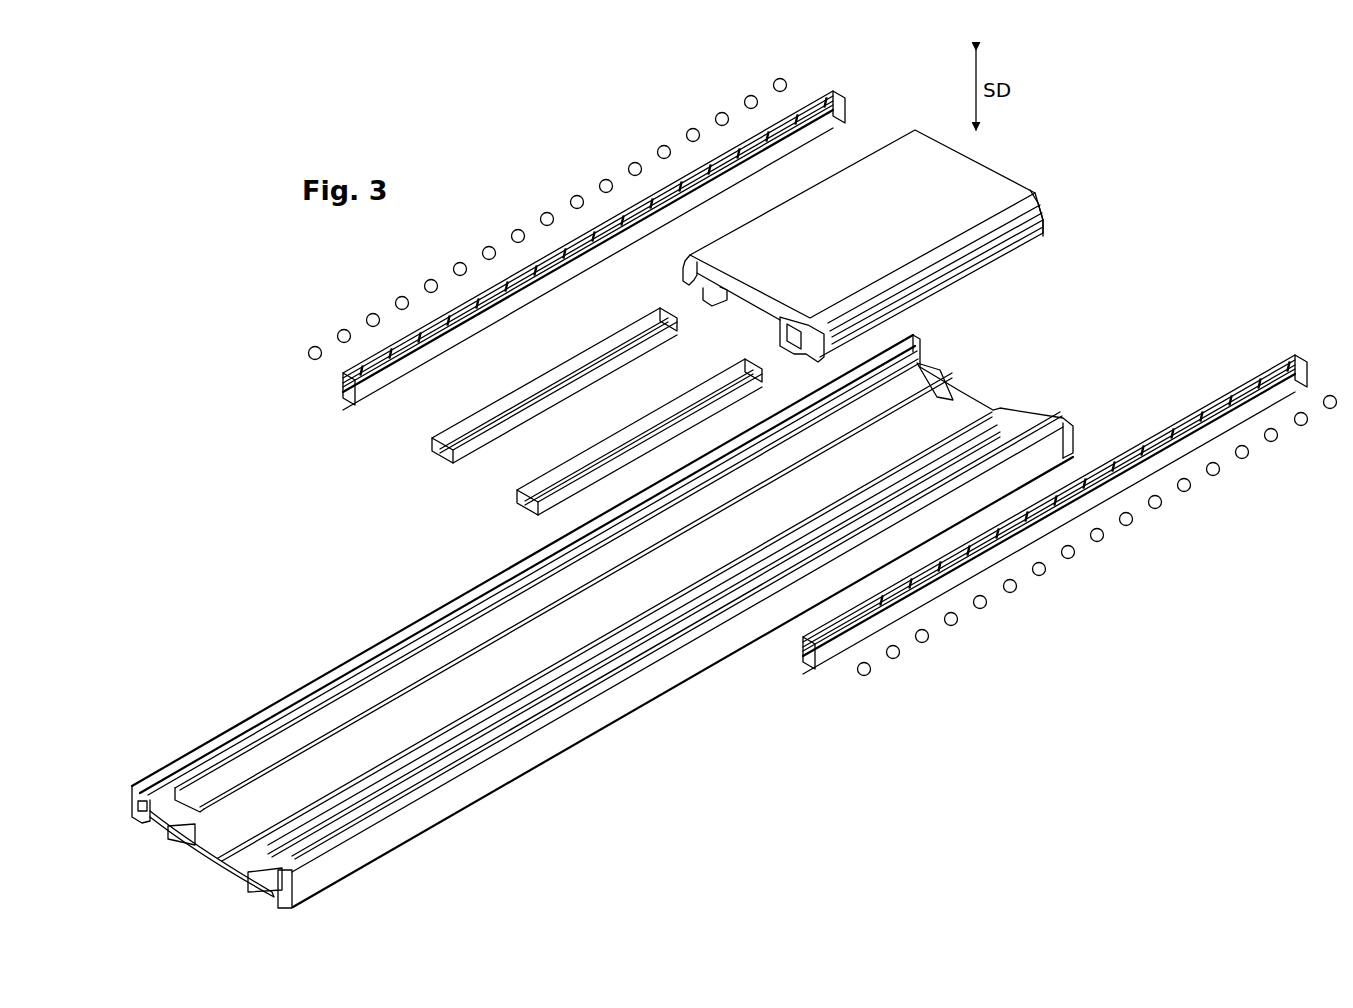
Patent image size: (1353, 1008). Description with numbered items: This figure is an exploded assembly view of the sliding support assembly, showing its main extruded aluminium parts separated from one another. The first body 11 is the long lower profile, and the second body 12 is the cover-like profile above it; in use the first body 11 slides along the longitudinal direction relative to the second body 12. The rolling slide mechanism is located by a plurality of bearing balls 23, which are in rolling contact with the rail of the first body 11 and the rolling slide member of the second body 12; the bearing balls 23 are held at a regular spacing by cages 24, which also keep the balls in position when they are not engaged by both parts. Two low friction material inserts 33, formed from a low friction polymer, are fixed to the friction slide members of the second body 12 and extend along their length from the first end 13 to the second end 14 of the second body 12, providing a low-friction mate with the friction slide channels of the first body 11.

The first body 11 is at (552, 744).
The second body 12 is at (913, 156).
The first end 13 is at (1038, 195).
The second end 14 is at (686, 256).
The bearing balls 23 is at (306, 350).
The cages 24 is at (837, 88).
The low friction material insert 33 is at (446, 442).